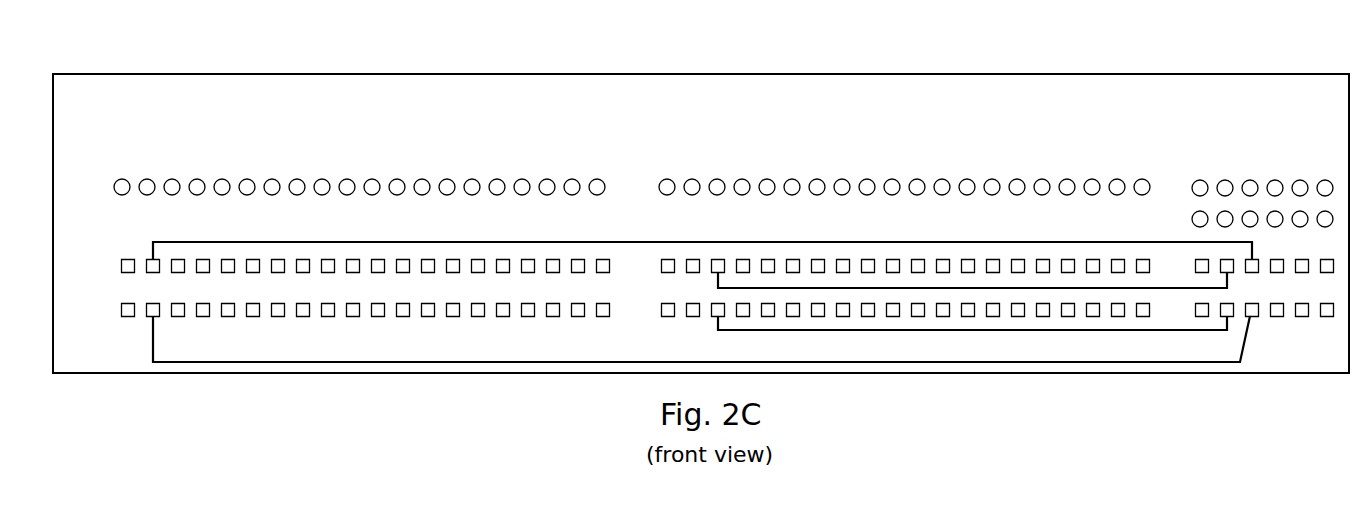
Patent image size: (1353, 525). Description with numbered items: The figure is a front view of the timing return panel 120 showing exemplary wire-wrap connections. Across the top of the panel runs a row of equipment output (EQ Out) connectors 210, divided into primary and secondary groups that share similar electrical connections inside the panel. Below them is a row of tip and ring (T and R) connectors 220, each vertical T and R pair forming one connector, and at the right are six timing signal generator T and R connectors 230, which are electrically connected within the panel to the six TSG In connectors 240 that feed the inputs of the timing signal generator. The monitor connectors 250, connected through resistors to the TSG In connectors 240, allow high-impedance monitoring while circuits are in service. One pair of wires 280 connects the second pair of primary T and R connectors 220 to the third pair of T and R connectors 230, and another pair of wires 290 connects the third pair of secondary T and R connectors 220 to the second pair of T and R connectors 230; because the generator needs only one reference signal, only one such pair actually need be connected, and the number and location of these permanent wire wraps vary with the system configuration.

The timing return panel 120 is at (455, 62).
The equipment output (EQ Out) connectors 210 is at (232, 180).
The tip and ring (T and R) connectors 220 is at (410, 303).
The timing signal generator T and R connectors 230 is at (1298, 318).
The timing signal generator input (TSG In) connectors 240 is at (1325, 218).
The monitor connectors 250 is at (1198, 187).
The pair of wires 280 is at (1030, 242).
The pair of wires 290 is at (853, 287).